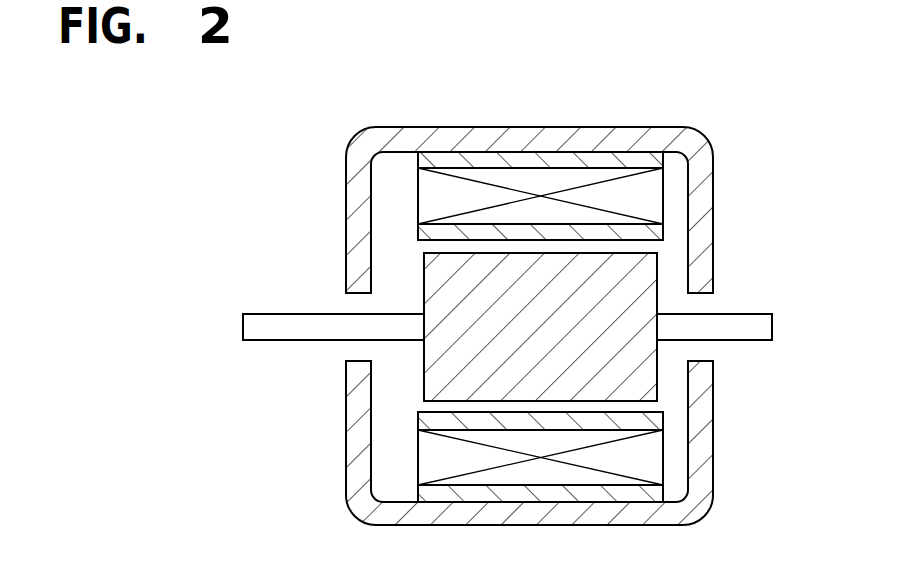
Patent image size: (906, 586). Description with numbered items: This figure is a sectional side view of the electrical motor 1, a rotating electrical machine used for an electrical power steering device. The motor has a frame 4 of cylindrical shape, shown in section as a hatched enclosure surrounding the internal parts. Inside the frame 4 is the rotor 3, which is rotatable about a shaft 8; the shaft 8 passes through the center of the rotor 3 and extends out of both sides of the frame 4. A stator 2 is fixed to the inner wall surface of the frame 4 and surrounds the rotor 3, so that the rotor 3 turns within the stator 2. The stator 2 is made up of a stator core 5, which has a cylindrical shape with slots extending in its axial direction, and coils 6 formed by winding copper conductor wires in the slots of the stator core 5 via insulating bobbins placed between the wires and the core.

The electrical motor 1 is at (330, 478).
The stator 2 is at (667, 187).
The rotor 3 is at (645, 292).
The frame 4 is at (397, 142).
The stator core 5 is at (575, 160).
The coils 6 is at (632, 200).
The shaft 8 is at (282, 328).